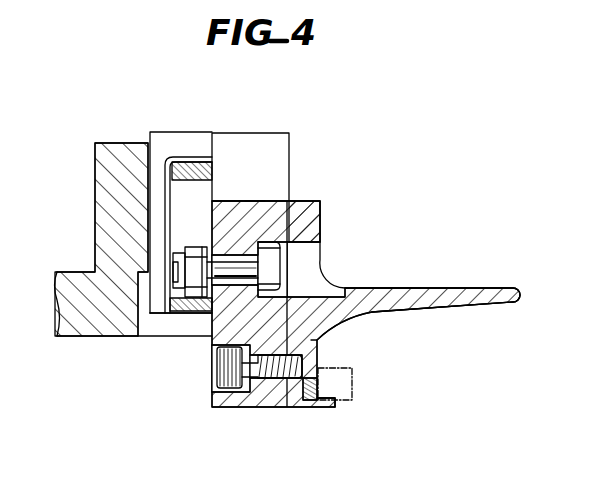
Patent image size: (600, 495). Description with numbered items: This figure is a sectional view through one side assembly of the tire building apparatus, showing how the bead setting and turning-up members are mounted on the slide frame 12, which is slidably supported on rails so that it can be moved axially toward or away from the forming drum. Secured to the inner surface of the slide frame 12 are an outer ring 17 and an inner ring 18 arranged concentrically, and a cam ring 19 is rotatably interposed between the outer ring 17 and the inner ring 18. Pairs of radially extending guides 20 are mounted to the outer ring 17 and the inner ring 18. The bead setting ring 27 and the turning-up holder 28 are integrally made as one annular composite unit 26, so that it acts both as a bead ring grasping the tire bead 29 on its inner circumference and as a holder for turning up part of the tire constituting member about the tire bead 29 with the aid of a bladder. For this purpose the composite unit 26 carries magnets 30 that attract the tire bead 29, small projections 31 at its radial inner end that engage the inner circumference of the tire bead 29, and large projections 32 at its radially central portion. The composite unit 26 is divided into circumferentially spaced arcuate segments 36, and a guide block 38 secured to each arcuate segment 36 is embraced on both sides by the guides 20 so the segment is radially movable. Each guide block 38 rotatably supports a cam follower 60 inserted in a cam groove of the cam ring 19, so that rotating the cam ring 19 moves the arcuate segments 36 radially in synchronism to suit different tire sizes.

The slide frame 12 is at (120, 143).
The outer ring 17 is at (186, 143).
The inner ring 18 is at (162, 327).
The cam ring 19 is at (213, 170).
The guide 20 is at (283, 133).
The composite unit 26 is at (322, 211).
The bead setting ring 27 is at (292, 405).
The turning-up holder 28 is at (415, 314).
The tire bead 29 is at (353, 373).
The magnet 30 is at (310, 402).
The small projection 31 is at (333, 400).
The large projection 32 is at (500, 287).
The arcuate segment 36 is at (386, 284).
The guide block 38 is at (255, 200).
The cam follower 60 is at (193, 247).